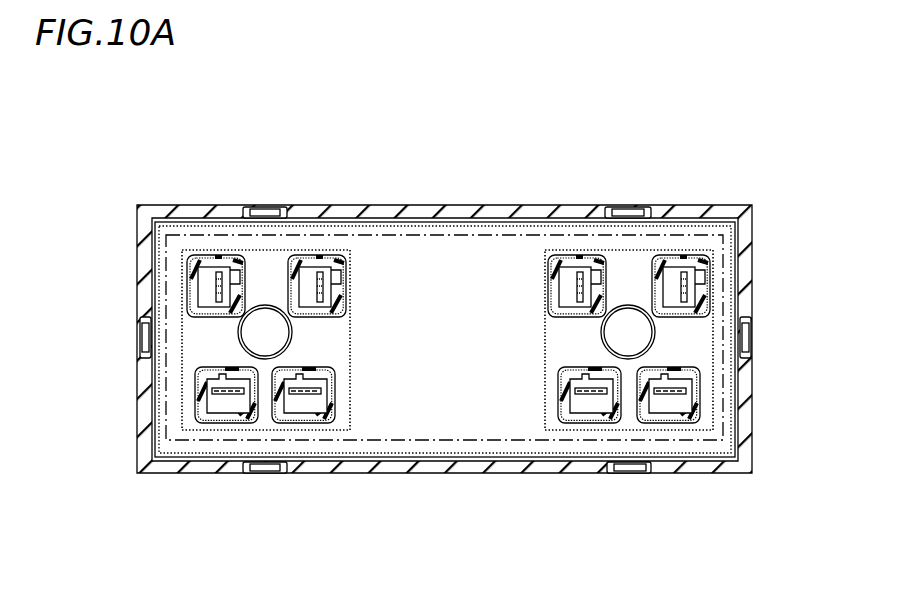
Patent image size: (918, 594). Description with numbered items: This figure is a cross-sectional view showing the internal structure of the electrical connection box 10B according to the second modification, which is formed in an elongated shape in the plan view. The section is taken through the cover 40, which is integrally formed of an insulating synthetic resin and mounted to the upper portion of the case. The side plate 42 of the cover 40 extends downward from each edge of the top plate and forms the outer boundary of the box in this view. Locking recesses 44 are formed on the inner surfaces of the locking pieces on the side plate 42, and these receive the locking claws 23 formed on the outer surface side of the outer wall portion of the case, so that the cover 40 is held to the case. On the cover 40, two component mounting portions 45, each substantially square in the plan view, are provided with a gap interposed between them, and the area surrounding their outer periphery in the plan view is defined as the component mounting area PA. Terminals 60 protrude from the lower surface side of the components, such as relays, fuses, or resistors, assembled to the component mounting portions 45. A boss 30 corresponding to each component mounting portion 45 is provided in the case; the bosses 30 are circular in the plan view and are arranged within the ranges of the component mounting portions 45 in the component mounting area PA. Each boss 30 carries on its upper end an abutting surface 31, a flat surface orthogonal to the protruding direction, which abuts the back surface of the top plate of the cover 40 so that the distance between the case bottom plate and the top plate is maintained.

The electrical connection box 10B is at (174, 175).
The cover 40 is at (136, 475).
The side plate 42 is at (400, 211).
The component mounting area PA is at (400, 441).
The component mounting portion 45 is at (202, 432).
The locking claw 23 is at (262, 209).
The locking recess 44 is at (281, 209).
The boss 30 is at (239, 346).
The abutting surface 31 is at (262, 332).
The terminal 60 is at (218, 291).